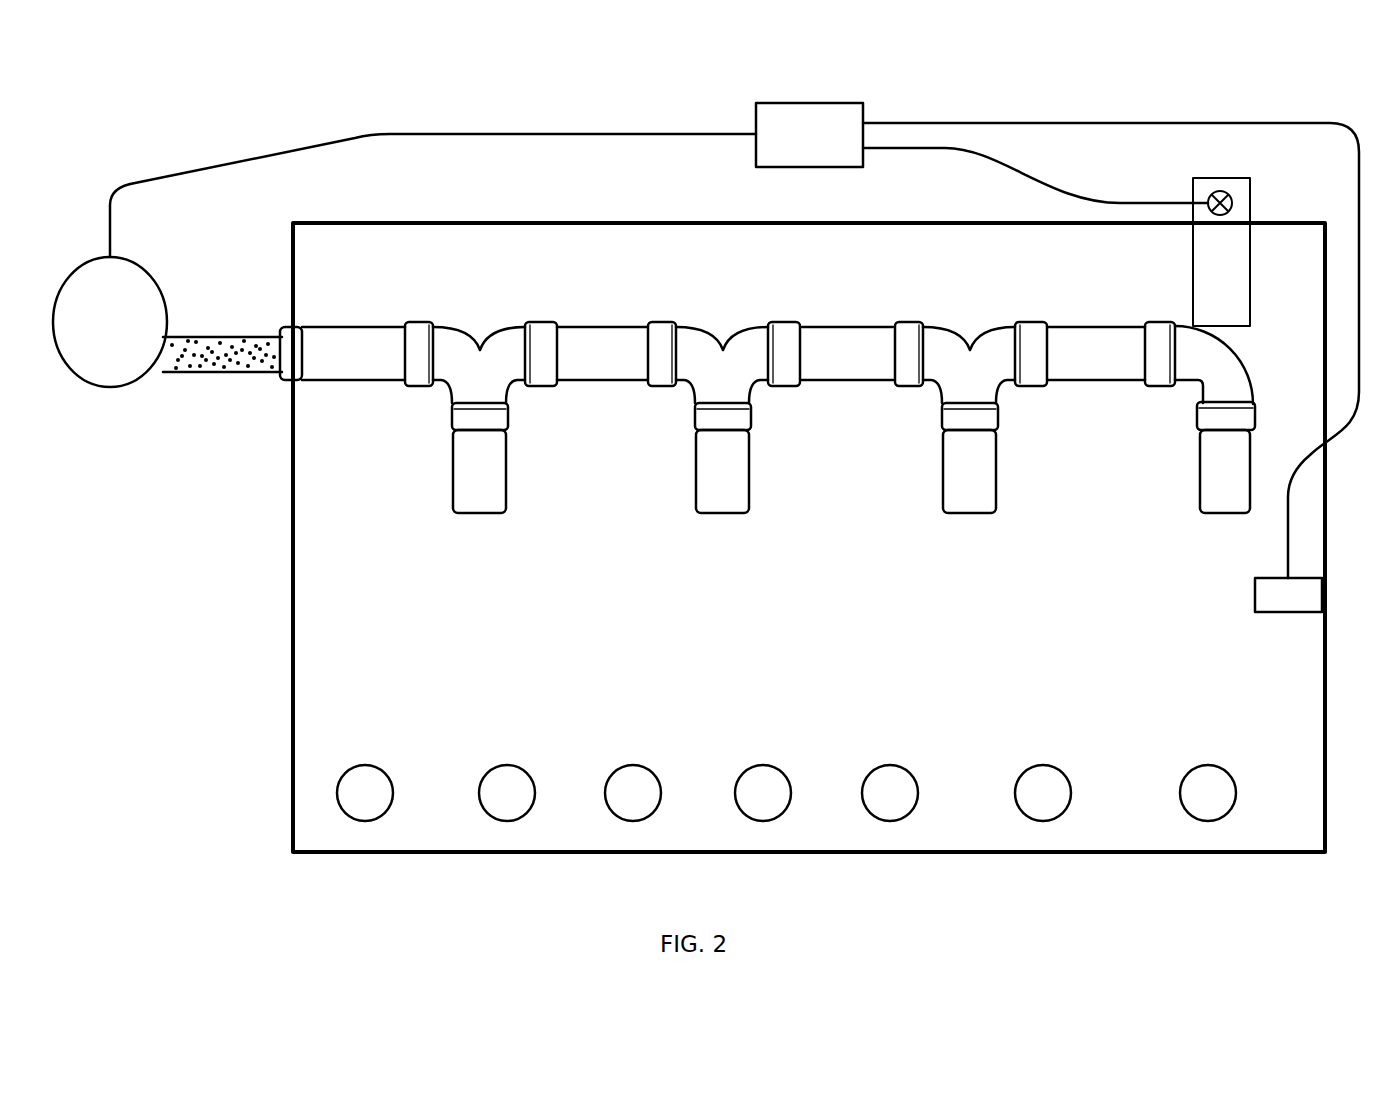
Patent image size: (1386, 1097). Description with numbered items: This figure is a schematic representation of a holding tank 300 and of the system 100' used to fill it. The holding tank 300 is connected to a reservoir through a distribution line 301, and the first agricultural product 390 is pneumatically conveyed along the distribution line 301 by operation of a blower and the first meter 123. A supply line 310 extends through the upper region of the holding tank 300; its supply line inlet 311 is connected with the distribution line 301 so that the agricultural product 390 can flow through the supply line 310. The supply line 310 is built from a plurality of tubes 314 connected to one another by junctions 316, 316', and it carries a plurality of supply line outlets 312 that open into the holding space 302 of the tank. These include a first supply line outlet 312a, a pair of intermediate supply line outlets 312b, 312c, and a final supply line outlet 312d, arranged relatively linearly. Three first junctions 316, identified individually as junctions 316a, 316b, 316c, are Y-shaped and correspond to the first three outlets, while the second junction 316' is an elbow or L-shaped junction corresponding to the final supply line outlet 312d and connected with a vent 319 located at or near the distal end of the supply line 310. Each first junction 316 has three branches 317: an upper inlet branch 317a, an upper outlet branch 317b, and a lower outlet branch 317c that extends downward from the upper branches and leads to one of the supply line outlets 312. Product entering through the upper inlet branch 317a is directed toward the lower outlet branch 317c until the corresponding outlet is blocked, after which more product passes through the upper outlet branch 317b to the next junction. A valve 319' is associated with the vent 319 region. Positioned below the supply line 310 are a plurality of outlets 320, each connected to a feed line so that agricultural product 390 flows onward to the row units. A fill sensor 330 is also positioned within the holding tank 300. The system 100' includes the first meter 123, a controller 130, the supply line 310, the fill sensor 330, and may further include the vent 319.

The system for filling the holding tank 100' is at (719, 451).
The first meter 123 is at (110, 299).
The controller 130 is at (805, 103).
The holding tank 300 is at (192, 557).
The distribution line 301 is at (207, 336).
The holding space 302 is at (1280, 718).
The supply line 310 is at (352, 413).
The supply line inlet 311 is at (275, 381).
The supply line outlets 312 is at (360, 504).
The first supply line outlet 312a is at (480, 528).
The intermediate supply line outlet 312b is at (723, 528).
The intermediate supply line outlet 312c is at (968, 528).
The final supply line outlet 312d is at (1228, 528).
The tubes 314 is at (605, 327).
The first junction 316 is at (465, 353).
The first junction 316a is at (430, 393).
The junction 316b is at (722, 293).
The junction 316c is at (968, 293).
The second junction 316' is at (1180, 333).
The branches 317 is at (405, 295).
The upper inlet branch 317a is at (425, 322).
The upper outlet branch 317b is at (533, 322).
The lower outlet branch 317c is at (512, 408).
The vent 319 is at (1263, 233).
The valve 319' is at (1227, 178).
The outlets 320 is at (490, 770).
The fill sensor 330 is at (1287, 612).
The first agricultural product 390 is at (172, 372).